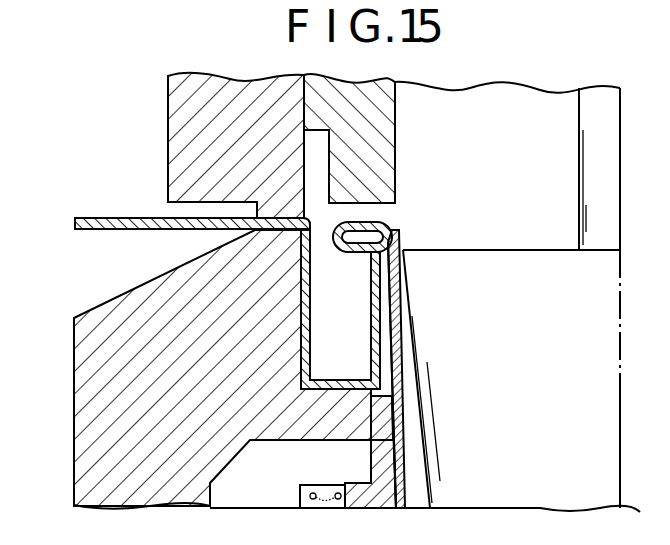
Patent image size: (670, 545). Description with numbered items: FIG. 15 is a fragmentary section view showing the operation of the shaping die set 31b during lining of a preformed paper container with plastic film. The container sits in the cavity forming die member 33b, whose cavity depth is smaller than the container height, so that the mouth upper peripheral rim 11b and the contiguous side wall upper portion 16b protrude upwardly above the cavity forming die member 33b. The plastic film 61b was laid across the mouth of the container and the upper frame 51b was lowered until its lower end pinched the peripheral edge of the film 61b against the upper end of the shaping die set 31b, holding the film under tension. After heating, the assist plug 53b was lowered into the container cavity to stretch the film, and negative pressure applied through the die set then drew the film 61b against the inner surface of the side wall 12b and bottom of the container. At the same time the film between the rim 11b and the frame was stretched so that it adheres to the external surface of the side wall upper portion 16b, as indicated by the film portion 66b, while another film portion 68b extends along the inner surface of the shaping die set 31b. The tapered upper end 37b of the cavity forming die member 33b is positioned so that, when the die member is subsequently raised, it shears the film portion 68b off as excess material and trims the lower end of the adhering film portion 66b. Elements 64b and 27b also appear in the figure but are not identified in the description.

The upper frame 51b is at (254, 158).
The plastic film 61b is at (108, 224).
The mouth upper peripheral rim 11b is at (389, 231).
The side wall upper portion 16b is at (380, 288).
The outer wall 64b is at (391, 295).
The film portion adhering to external surface of side wall upper portion 66b is at (377, 322).
The side wall 12b is at (389, 338).
The film portion extending along inner surface of shaping die set 68b is at (376, 372).
The shaping die set 31b is at (211, 385).
The tapered upper end 37b is at (378, 413).
The assist plug 53b is at (572, 431).
The cavity forming die member 33b is at (382, 465).
The ball box 27b is at (302, 498).